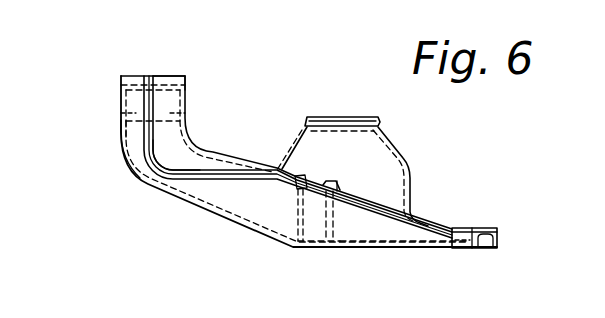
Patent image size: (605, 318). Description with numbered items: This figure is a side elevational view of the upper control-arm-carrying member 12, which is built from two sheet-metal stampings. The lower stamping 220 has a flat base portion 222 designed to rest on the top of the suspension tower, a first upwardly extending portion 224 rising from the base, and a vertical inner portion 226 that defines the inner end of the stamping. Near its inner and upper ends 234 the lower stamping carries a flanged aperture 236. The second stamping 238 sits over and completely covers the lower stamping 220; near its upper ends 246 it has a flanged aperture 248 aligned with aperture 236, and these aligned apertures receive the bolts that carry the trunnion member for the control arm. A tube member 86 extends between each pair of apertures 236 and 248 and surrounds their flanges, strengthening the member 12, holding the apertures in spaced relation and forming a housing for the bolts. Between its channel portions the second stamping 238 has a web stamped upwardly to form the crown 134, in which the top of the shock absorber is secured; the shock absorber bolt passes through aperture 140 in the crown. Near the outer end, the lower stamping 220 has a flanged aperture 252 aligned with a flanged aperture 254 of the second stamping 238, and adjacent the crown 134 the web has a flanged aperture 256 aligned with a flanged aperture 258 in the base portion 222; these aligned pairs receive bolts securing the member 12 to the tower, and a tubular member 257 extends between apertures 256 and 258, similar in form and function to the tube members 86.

The upper control-arm-carrying member 12 is at (213, 223).
The tube member 86 is at (133, 128).
The crown 134 is at (393, 167).
The aperture 140 is at (327, 123).
The lower stamping 220 is at (197, 193).
The flat base portion 222 is at (396, 238).
The first upwardly extending portion 224 is at (270, 218).
The vertical inner portion 226 is at (133, 138).
The inner and upper ends 234 is at (132, 79).
The flanged aperture 236 is at (130, 118).
The second stamping 238 is at (186, 156).
The upper ends 246 is at (168, 77).
The flanged aperture 248 is at (180, 113).
The flanged aperture 252 is at (470, 248).
The flanged aperture 254 is at (468, 229).
The flanged aperture 256 is at (325, 180).
The tubular member 257 is at (333, 217).
The flanged aperture 258 is at (322, 244).